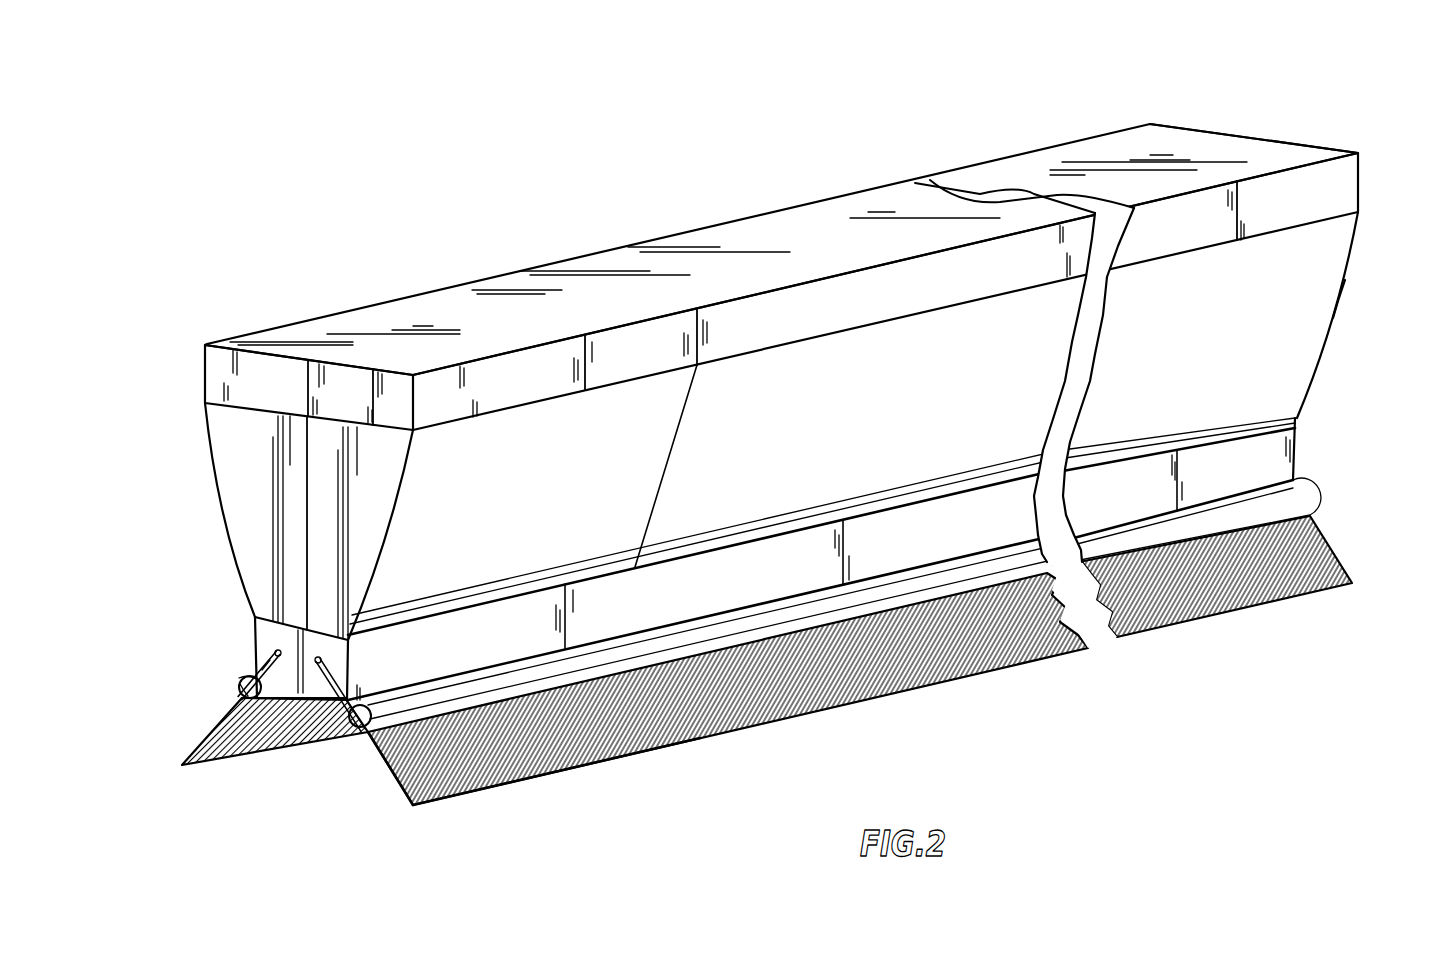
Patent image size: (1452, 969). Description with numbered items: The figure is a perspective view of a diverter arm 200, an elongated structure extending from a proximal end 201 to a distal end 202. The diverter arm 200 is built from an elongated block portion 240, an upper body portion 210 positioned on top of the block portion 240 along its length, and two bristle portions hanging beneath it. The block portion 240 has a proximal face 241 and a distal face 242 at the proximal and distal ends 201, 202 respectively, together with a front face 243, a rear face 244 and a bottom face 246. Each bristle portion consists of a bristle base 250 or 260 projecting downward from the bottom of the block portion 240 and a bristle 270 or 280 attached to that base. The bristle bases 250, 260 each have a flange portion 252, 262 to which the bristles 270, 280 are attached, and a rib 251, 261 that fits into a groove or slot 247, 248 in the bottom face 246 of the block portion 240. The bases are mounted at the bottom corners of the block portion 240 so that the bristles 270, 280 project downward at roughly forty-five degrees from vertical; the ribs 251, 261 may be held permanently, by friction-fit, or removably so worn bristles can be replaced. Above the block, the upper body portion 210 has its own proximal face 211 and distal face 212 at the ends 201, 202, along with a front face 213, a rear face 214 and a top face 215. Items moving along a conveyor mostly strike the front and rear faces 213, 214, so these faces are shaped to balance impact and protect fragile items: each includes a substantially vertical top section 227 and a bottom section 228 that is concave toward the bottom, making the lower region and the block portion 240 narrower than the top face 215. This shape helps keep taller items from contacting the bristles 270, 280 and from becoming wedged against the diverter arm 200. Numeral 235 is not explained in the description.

The diverter arm 200 is at (1145, 100).
The proximal end 201 is at (255, 363).
The distal end 202 is at (1242, 132).
The upper body portion 210 is at (1347, 281).
The proximal face 211 is at (245, 498).
The distal face 212 is at (1335, 307).
The front face 213 is at (877, 468).
The rear face 214 is at (207, 443).
The top face 215 is at (660, 245).
The top section 227 is at (705, 322).
The bottom section 228 is at (685, 435).
The crease of body 235 is at (317, 607).
The elongated block portion 240 is at (283, 727).
The proximal face 241 is at (303, 707).
The distal face 242 is at (1297, 425).
The front face 243 is at (770, 570).
The rear face 244 is at (253, 625).
The bottom face 246 is at (325, 722).
The groove or slot 247 is at (345, 645).
The groove or slot 248 is at (262, 665).
The bristle base 250 is at (507, 783).
The rib 251 is at (350, 680).
The flange portion 252 is at (445, 797).
The bristle base 260 is at (227, 692).
The rib 261 is at (237, 678).
The flange portion 262 is at (240, 684).
The bristle 270 is at (690, 718).
The bristle 280 is at (172, 767).